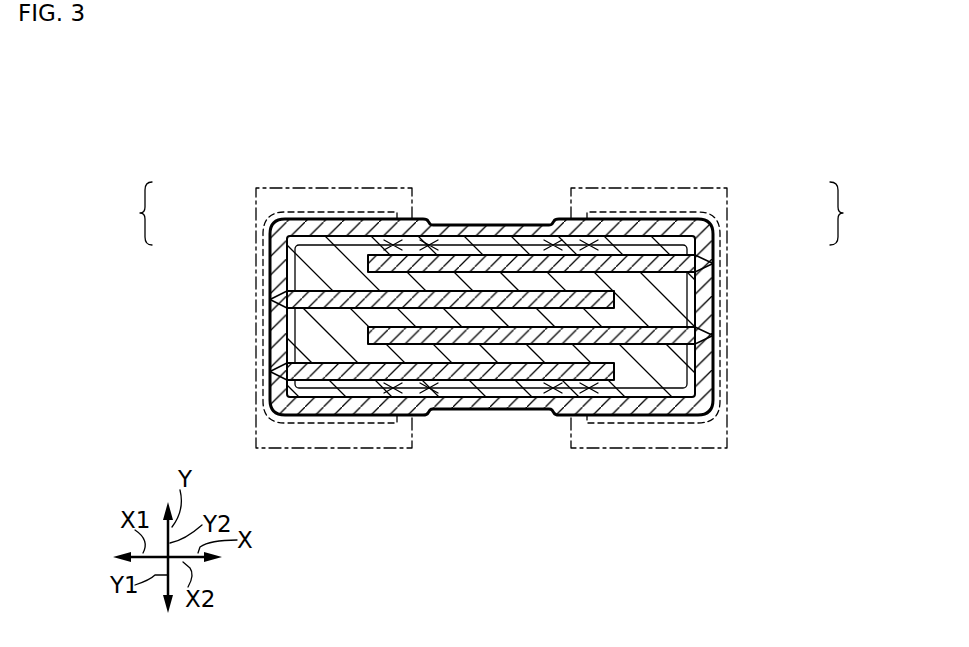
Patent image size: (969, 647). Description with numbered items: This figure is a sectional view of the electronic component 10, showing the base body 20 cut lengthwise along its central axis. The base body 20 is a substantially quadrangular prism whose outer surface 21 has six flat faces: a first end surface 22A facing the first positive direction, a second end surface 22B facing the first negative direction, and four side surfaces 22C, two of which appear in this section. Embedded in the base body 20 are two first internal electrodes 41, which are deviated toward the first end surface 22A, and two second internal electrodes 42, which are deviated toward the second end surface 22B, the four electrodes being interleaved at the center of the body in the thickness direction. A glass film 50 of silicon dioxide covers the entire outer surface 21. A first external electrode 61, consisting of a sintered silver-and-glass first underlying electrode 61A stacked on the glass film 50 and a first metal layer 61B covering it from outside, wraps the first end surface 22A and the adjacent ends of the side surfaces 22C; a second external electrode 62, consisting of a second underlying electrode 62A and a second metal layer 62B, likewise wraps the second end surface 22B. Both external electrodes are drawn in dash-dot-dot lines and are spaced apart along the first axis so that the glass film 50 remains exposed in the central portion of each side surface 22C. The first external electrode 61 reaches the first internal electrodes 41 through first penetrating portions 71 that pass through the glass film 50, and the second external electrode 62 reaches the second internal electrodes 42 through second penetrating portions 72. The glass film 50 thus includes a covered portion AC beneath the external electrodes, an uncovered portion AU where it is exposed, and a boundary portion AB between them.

The electronic component 10 is at (268, 120).
The base body 20 is at (343, 172).
The outer surface 21 is at (491, 317).
The first end surface 22A is at (288, 268).
The second end surface 22B is at (700, 382).
The side surfaces 22C is at (447, 235).
The first internal electrode 41 is at (340, 305).
The second internal electrode 42 is at (657, 263).
The glass film 50 is at (523, 224).
The first external electrode 61 is at (132, 213).
The first underlying electrode 61A is at (285, 212).
The first metal layer 61B is at (256, 222).
The second external electrode 62 is at (851, 213).
The second underlying electrode 62A is at (705, 210).
The second metal layer 62B is at (727, 222).
The first penetrating portion 71 is at (271, 300).
The second penetrating portion 72 is at (713, 265).
The boundary portion AB is at (394, 243).
The covered portion AC is at (362, 218).
The uncovered portion AU is at (490, 243).